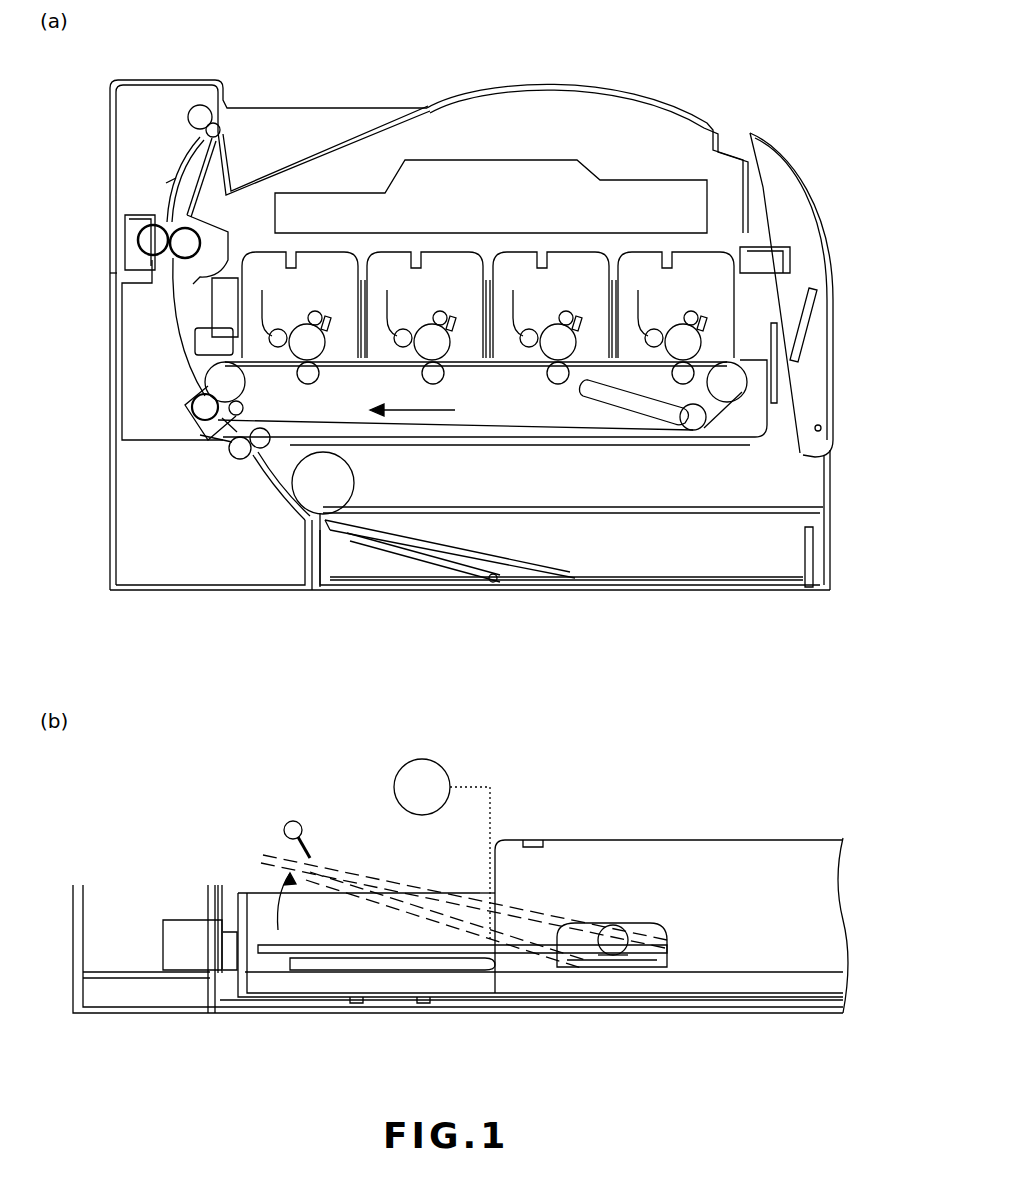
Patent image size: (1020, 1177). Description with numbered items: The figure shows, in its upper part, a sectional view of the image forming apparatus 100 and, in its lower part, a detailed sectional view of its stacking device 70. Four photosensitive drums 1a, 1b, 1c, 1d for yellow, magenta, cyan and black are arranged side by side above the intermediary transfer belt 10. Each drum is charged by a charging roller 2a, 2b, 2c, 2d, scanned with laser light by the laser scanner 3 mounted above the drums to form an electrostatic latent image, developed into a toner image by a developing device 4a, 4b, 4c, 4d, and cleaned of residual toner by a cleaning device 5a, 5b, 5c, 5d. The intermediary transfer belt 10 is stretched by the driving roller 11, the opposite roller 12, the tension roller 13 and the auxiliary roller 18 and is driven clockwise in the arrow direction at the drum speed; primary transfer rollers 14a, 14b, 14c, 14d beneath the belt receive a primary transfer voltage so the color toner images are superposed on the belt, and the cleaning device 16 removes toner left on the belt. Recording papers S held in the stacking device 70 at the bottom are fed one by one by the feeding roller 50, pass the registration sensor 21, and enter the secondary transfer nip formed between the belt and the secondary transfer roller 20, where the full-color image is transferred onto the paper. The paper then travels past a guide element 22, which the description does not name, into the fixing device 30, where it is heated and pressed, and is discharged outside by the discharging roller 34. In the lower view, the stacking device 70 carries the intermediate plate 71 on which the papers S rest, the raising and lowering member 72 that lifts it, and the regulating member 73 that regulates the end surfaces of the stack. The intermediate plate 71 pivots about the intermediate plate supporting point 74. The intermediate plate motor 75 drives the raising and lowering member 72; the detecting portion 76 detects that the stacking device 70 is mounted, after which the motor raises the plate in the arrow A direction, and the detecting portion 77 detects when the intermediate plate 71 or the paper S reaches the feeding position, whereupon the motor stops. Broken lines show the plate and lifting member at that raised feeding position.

The image forming apparatus 100 is at (474, 62).
The laser scanner 3 is at (491, 196).
The photosensitive drum 1a is at (303, 306).
The photosensitive drum 1b is at (428, 306).
The photosensitive drum 1c is at (554, 306).
The photosensitive drum 1d is at (676, 306).
The charging roller 2a is at (311, 314).
The charging roller 2b is at (436, 314).
The charging roller 2c is at (561, 314).
The charging roller 2d is at (686, 314).
The developing device 4a is at (272, 334).
The developing device 4b is at (397, 334).
The developing device 4c is at (522, 334).
The developing device 4d is at (647, 334).
The cleaning device 5a is at (331, 325).
The cleaning device 5b is at (456, 325).
The cleaning device 5c is at (581, 325).
The cleaning device 5d is at (706, 325).
The intermediary transfer belt 10 is at (518, 428).
The driving roller 11 is at (727, 382).
The opposite roller 12 is at (225, 382).
The tension roller 13 is at (700, 420).
The primary transfer roller 14a is at (298, 379).
The primary transfer roller 14b is at (423, 379).
The primary transfer roller 14c is at (548, 379).
The primary transfer roller 14d is at (673, 379).
The cleaning device 16 is at (214, 341).
The auxiliary roller 18 is at (243, 408).
The secondary transfer roller 20 is at (192, 407).
The registration sensor 21 is at (230, 445).
The conveyance guide 22 is at (172, 180).
The fixing device 30 is at (125, 248).
The discharging roller 34 is at (200, 117).
The feeding roller 50 is at (323, 483).
The stacking device 70 is at (785, 820).
The intermediate plate 71 is at (515, 583).
The raising and lowering member 72 is at (400, 560).
The regulating member 73 is at (808, 582).
The intermediate plate supporting point 74 is at (617, 942).
The intermediate plate motor 75 is at (455, 775).
The detecting portion 76 is at (188, 920).
The detecting portion 77 is at (296, 822).
The recording paper s is at (640, 580).